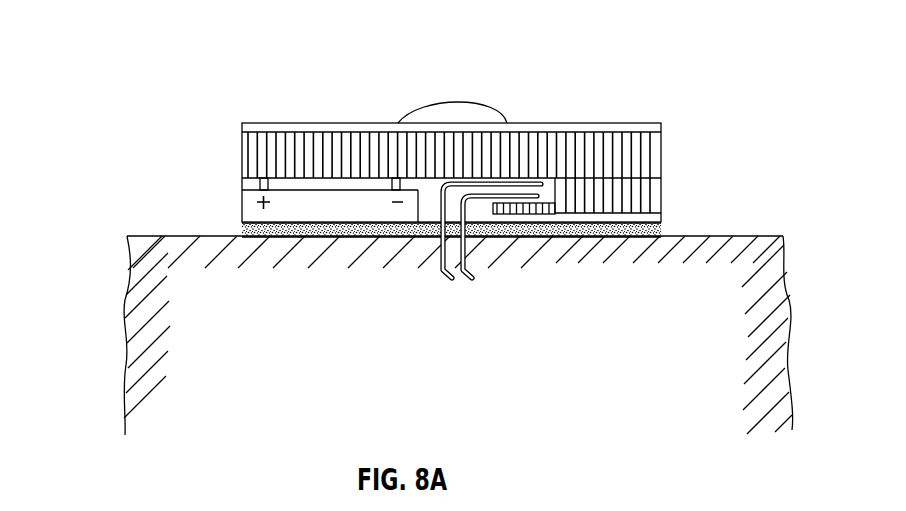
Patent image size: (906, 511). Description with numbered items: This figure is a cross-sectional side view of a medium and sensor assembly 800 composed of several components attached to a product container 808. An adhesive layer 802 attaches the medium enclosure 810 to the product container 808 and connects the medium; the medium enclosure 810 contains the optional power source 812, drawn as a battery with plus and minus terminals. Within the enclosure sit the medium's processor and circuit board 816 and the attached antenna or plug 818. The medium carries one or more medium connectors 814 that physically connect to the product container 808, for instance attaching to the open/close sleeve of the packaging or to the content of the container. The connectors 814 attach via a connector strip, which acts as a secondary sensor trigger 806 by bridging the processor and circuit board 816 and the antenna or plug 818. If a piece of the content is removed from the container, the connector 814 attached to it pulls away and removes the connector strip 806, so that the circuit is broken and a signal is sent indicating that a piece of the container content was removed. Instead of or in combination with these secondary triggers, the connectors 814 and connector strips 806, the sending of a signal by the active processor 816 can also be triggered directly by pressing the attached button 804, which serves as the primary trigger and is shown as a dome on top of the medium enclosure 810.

The medium and sensor assembly 800 is at (131, 68).
The adhesive layer 802 is at (240, 230).
The button 804 is at (467, 102).
The connector strip 806 is at (520, 190).
The product container 808 is at (152, 333).
The medium enclosure 810 is at (262, 123).
The power source 812 is at (240, 203).
The medium connector 814 is at (443, 277).
The processor and circuit board 816 is at (643, 157).
The antenna or plug 818 is at (650, 198).